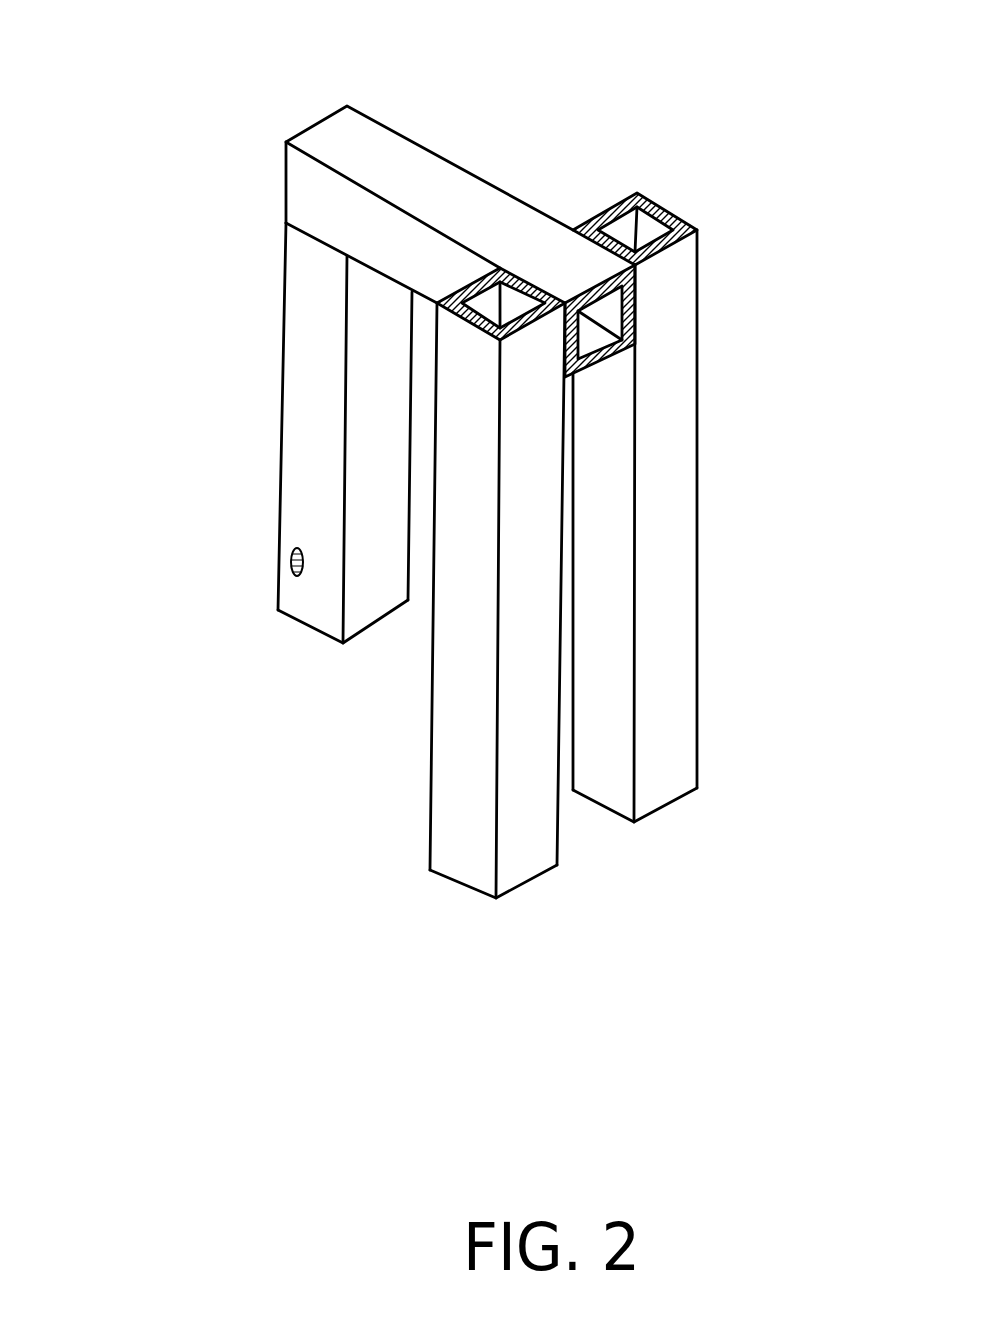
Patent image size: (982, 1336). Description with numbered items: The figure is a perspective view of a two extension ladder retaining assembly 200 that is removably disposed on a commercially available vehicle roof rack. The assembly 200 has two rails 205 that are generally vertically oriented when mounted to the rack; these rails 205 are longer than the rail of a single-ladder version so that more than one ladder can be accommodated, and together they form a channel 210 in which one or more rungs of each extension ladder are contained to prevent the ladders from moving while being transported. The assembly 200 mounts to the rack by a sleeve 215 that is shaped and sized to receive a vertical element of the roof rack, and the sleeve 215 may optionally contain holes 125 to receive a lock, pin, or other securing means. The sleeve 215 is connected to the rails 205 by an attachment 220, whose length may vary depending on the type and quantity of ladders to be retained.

The two extension ladder retaining assembly 200 is at (235, 135).
The rail 205 is at (457, 768).
The channel 210 is at (578, 810).
The sleeve 215 is at (297, 432).
The attachment 220 is at (457, 185).
The holes 125 is at (293, 553).